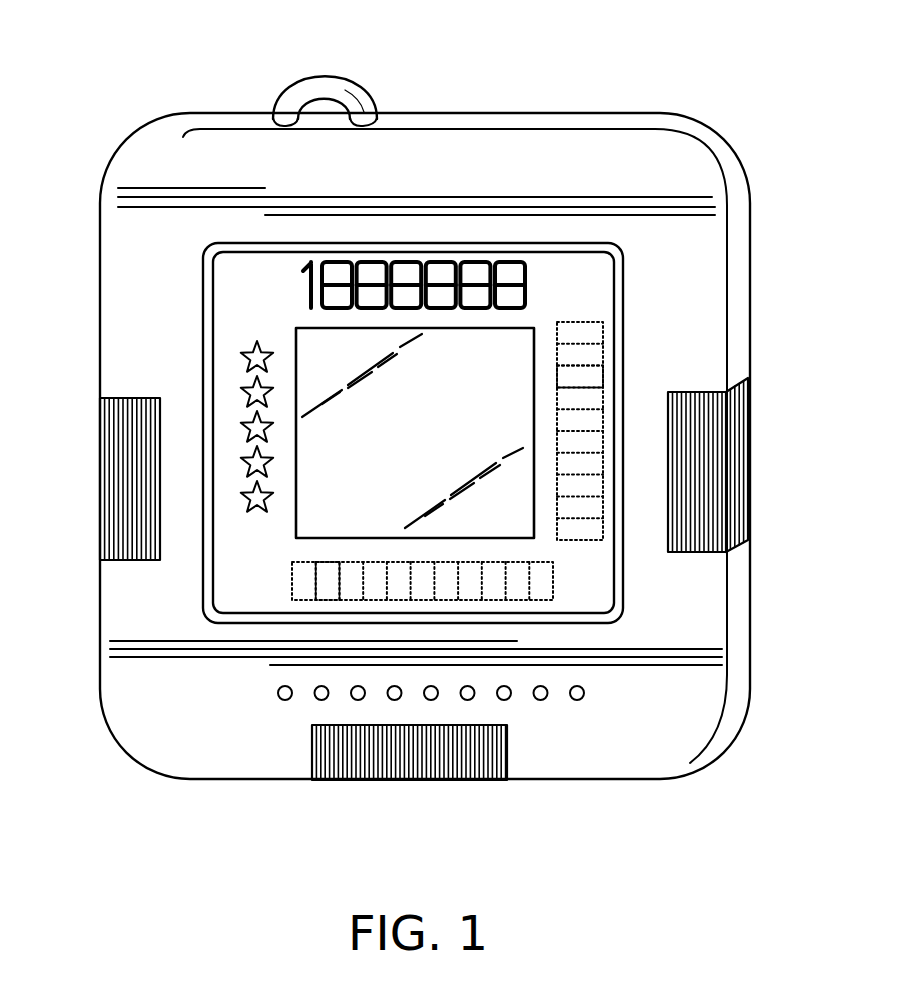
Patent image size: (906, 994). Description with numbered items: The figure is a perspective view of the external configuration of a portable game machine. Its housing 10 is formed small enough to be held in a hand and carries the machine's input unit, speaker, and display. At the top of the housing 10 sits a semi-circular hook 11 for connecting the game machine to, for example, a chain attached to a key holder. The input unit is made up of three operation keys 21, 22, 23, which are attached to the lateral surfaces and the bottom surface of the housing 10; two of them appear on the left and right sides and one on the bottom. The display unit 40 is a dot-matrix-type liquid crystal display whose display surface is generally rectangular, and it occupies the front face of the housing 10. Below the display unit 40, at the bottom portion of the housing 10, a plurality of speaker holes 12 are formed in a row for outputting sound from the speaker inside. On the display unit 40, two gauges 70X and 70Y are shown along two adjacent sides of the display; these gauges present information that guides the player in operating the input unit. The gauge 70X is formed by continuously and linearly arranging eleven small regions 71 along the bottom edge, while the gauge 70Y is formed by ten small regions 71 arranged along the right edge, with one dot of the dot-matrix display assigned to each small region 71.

The housing 10 is at (594, 128).
The semi-circular hook 11 is at (300, 95).
The speaker holes 12 is at (510, 697).
The operation key 21 is at (125, 478).
The operation key 22 is at (372, 748).
The operation key 23 is at (690, 480).
The display unit 40 is at (478, 245).
The gauge 70X is at (548, 576).
The gauge 70Y is at (568, 322).
The small region 71 is at (578, 386).